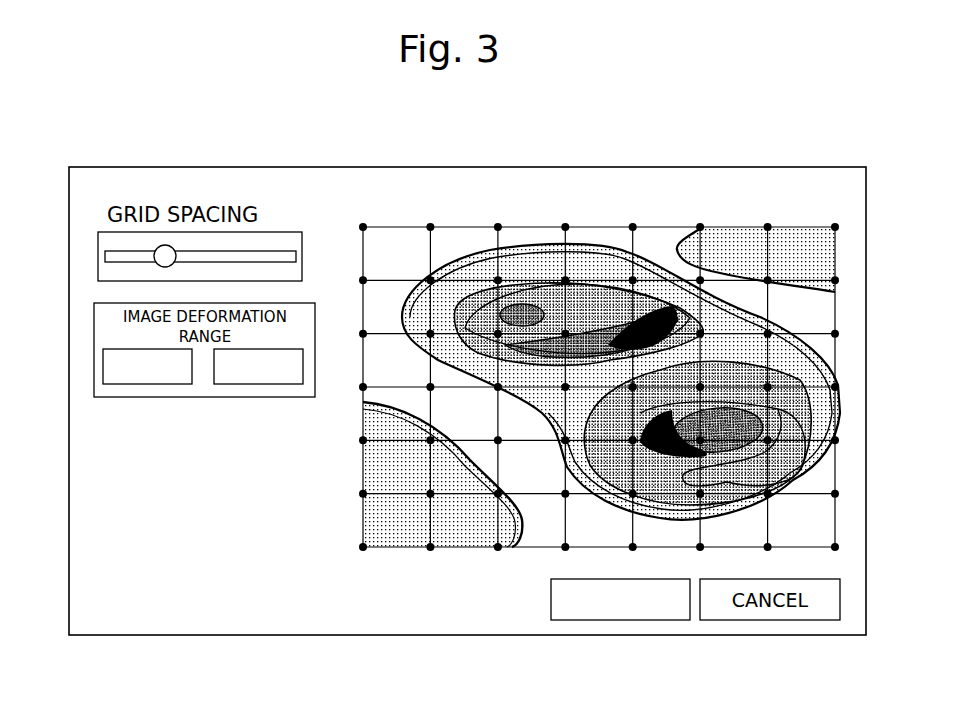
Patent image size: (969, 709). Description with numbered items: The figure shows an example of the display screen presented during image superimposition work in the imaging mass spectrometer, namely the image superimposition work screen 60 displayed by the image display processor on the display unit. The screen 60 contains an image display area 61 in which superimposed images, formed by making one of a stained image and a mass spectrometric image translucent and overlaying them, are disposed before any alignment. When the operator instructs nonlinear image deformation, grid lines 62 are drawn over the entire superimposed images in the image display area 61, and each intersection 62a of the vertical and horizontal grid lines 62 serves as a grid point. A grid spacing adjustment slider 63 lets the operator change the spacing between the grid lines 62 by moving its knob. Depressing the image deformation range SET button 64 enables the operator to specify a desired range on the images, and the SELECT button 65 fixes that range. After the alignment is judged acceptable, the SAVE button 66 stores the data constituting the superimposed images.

The image superimposition work screen 60 is at (667, 167).
The image display area 61 is at (735, 228).
The grid lines 62 is at (403, 278).
The intersection 62a is at (503, 275).
The grid spacing adjustment slider 63 is at (280, 231).
The image deformation range SET button 64 is at (115, 385).
The image deformation range SELECT button 65 is at (230, 384).
The SAVE button 66 is at (655, 621).